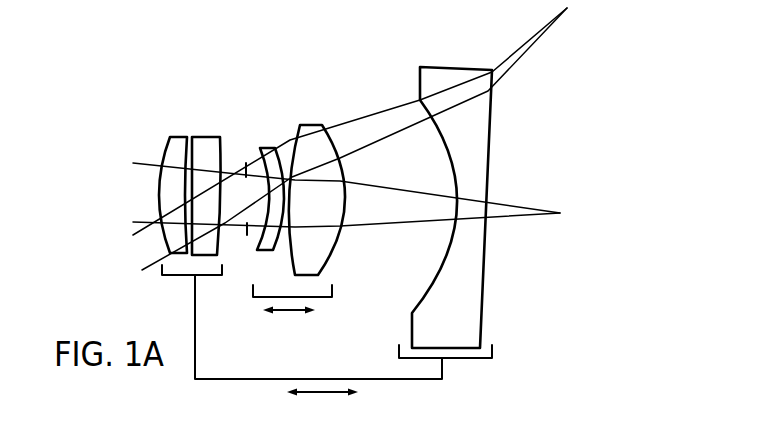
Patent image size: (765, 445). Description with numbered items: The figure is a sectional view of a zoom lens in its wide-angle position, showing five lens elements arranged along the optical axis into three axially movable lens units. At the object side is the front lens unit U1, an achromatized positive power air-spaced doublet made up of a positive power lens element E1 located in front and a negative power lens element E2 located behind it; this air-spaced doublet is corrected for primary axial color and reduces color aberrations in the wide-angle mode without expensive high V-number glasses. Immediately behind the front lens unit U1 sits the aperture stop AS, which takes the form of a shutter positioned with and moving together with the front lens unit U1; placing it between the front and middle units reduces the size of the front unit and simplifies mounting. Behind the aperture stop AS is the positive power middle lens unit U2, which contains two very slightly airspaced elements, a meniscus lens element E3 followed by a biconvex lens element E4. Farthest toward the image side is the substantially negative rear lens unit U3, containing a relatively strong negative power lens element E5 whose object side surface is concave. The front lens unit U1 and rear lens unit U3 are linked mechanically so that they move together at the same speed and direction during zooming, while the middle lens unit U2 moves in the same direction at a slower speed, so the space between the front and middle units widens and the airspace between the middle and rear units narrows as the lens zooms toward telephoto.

The front lens unit U1 is at (183, 113).
The middle lens unit U2 is at (292, 118).
The rear lens unit U3 is at (434, 50).
The positive power lens element E1 is at (168, 148).
The negative power lens element E2 is at (208, 137).
The meniscus lens element E3 is at (258, 250).
The biconvex lens element E4 is at (325, 252).
The negative power lens element E5 is at (468, 308).
The aperture stop AS is at (247, 166).